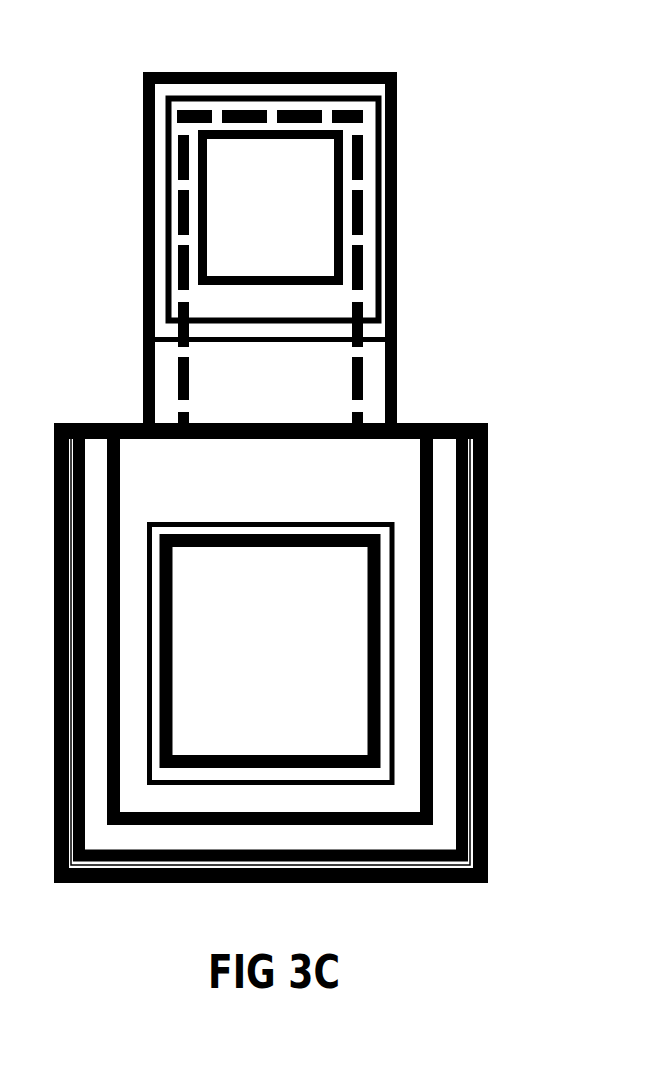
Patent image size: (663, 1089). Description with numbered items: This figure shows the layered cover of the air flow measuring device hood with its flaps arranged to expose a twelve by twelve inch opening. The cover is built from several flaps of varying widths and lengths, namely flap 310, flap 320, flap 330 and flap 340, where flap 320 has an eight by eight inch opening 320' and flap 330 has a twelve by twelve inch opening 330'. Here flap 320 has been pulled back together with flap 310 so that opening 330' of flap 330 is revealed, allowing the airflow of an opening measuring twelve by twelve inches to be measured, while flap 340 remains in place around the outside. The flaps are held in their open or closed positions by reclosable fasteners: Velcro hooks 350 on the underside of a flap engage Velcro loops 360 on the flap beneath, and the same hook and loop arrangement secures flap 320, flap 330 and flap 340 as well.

The flap 310 is at (362, 172).
The flap 320 is at (307, 222).
The opening 320' is at (270, 222).
The flap 330 is at (304, 584).
The opening 330' is at (284, 619).
The flap 340 is at (445, 527).
The Velcro hooks 350 is at (208, 332).
The Velcro loops 360 is at (153, 533).